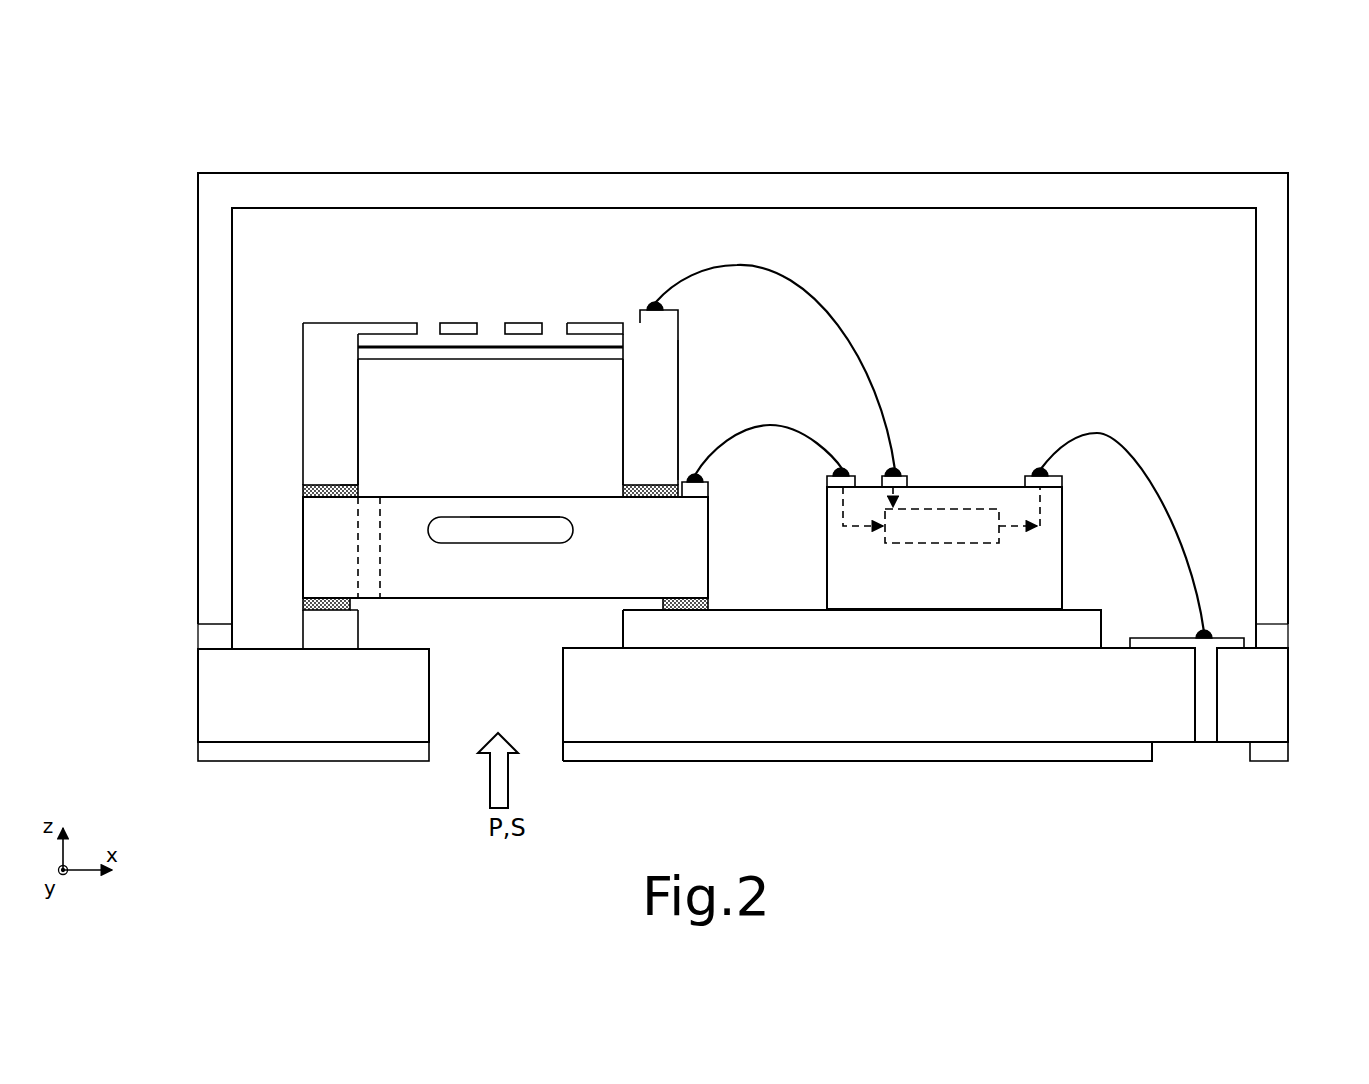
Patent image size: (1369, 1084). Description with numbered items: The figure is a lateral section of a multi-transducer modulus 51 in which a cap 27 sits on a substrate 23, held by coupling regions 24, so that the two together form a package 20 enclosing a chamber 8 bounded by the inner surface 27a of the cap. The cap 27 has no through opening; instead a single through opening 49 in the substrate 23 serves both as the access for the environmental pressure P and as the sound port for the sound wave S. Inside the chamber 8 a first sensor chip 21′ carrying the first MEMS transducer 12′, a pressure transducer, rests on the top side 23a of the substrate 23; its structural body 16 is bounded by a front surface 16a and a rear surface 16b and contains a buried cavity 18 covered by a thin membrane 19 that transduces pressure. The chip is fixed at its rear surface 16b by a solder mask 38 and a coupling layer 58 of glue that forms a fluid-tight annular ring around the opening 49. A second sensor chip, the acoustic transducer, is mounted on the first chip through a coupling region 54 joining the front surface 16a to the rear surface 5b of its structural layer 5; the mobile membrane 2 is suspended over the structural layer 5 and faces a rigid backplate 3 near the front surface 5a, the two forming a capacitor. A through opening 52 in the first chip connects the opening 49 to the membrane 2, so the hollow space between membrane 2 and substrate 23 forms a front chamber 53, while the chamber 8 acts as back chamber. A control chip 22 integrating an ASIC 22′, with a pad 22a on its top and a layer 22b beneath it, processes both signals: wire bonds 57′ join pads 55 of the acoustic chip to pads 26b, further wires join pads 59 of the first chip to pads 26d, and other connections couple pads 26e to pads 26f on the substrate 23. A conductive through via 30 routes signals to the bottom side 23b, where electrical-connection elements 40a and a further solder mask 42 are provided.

The membrane 2 is at (493, 350).
The rigid plate 3 is at (524, 331).
The structural layer 5 is at (638, 420).
The front surface 5a is at (324, 321).
The rear surface 5b is at (350, 492).
The chamber 8 is at (1205, 245).
The first MEMS transducer 12′ is at (315, 580).
The structural body 16 is at (654, 552).
The front surface 16a is at (604, 495).
The rear surface 16b is at (650, 602).
The buried cavity 18 is at (473, 523).
The membrane 19 is at (525, 507).
The package 20 is at (195, 348).
The first sensor chip 21′ is at (714, 553).
The control chip 22 is at (825, 577).
The ASIC 22′ is at (943, 508).
The chip top pad 22a is at (1003, 478).
The die attach layer 22b is at (950, 617).
The substrate 23 is at (210, 706).
The top side 23a is at (262, 645).
The bottom side 23b is at (283, 745).
The coupling regions 24 is at (210, 638).
The pads 26b is at (905, 478).
The pads 26d is at (828, 482).
The pads 26e is at (1030, 472).
The pads 26f is at (1232, 638).
The cap 27 is at (327, 186).
The lid inner surface 27a is at (1057, 212).
The conductive through via 30 is at (1210, 705).
The solder mask 38 is at (1033, 640).
The electrical-connection elements 40a is at (1163, 750).
The solder mask 42 is at (602, 750).
The through opening 49 is at (460, 752).
The multi-transducer modulus 51 is at (160, 193).
The through opening 52 is at (368, 508).
The front chamber 53 is at (376, 395).
The coupling region 54 is at (305, 489).
The pads 55 is at (641, 309).
The wire bonds 57′ is at (828, 318).
The coupling layer 58 is at (328, 612).
The pads 59 is at (710, 486).